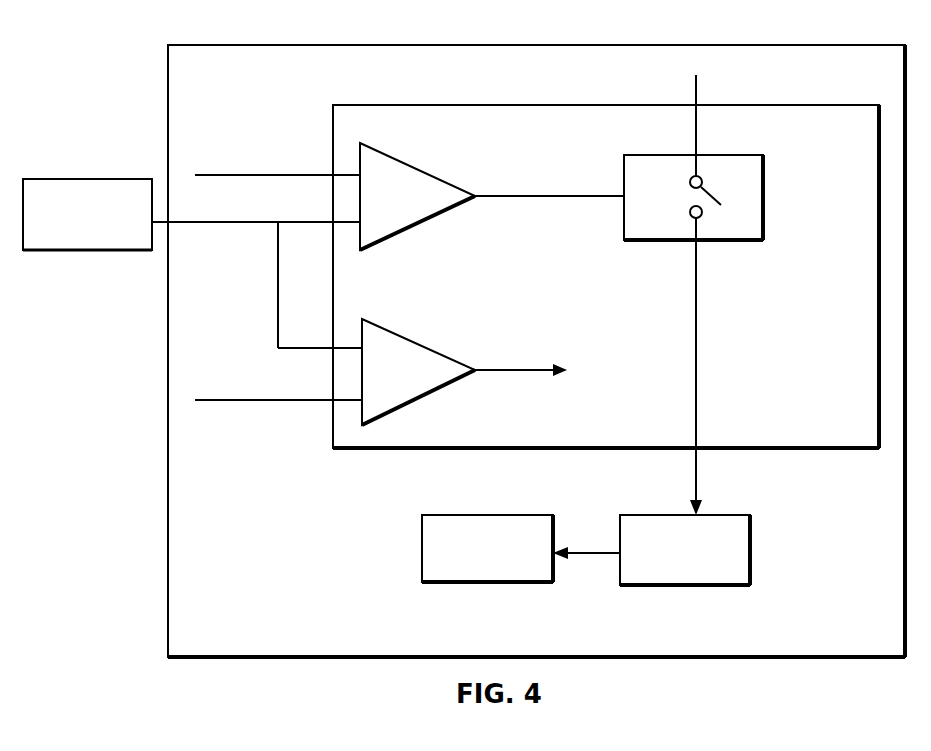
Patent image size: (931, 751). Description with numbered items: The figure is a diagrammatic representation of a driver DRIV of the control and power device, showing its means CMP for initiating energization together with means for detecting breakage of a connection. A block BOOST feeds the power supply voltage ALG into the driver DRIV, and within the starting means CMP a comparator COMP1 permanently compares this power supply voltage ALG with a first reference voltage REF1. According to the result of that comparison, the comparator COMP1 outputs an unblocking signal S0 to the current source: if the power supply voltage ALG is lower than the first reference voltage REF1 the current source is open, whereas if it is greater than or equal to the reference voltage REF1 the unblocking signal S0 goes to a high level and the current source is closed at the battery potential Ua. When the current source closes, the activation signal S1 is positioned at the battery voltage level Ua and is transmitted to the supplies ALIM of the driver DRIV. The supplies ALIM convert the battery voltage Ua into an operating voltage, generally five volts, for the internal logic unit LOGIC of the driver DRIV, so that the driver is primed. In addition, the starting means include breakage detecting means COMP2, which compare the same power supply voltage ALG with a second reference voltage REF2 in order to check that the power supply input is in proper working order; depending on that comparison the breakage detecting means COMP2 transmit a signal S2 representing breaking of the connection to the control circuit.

The driver DRIV is at (206, 45).
The means for initiating energization CMP is at (364, 105).
The boost converter BOOST is at (87, 214).
The power supply voltage ALG is at (257, 269).
The first reference voltage REF1 is at (277, 164).
The second reference voltage REF2 is at (278, 389).
The comparator COMP1 is at (423, 202).
The means for detecting breakage of the connection COMP2 is at (420, 381).
The unblocking signal S0 is at (549, 182).
The signal representing breaking of the connection S2 is at (521, 358).
The battery potential Ua is at (723, 125).
The activation signal S1 is at (722, 366).
The power supply ALIM is at (651, 550).
The internal logic unit LOGIC is at (487, 548).